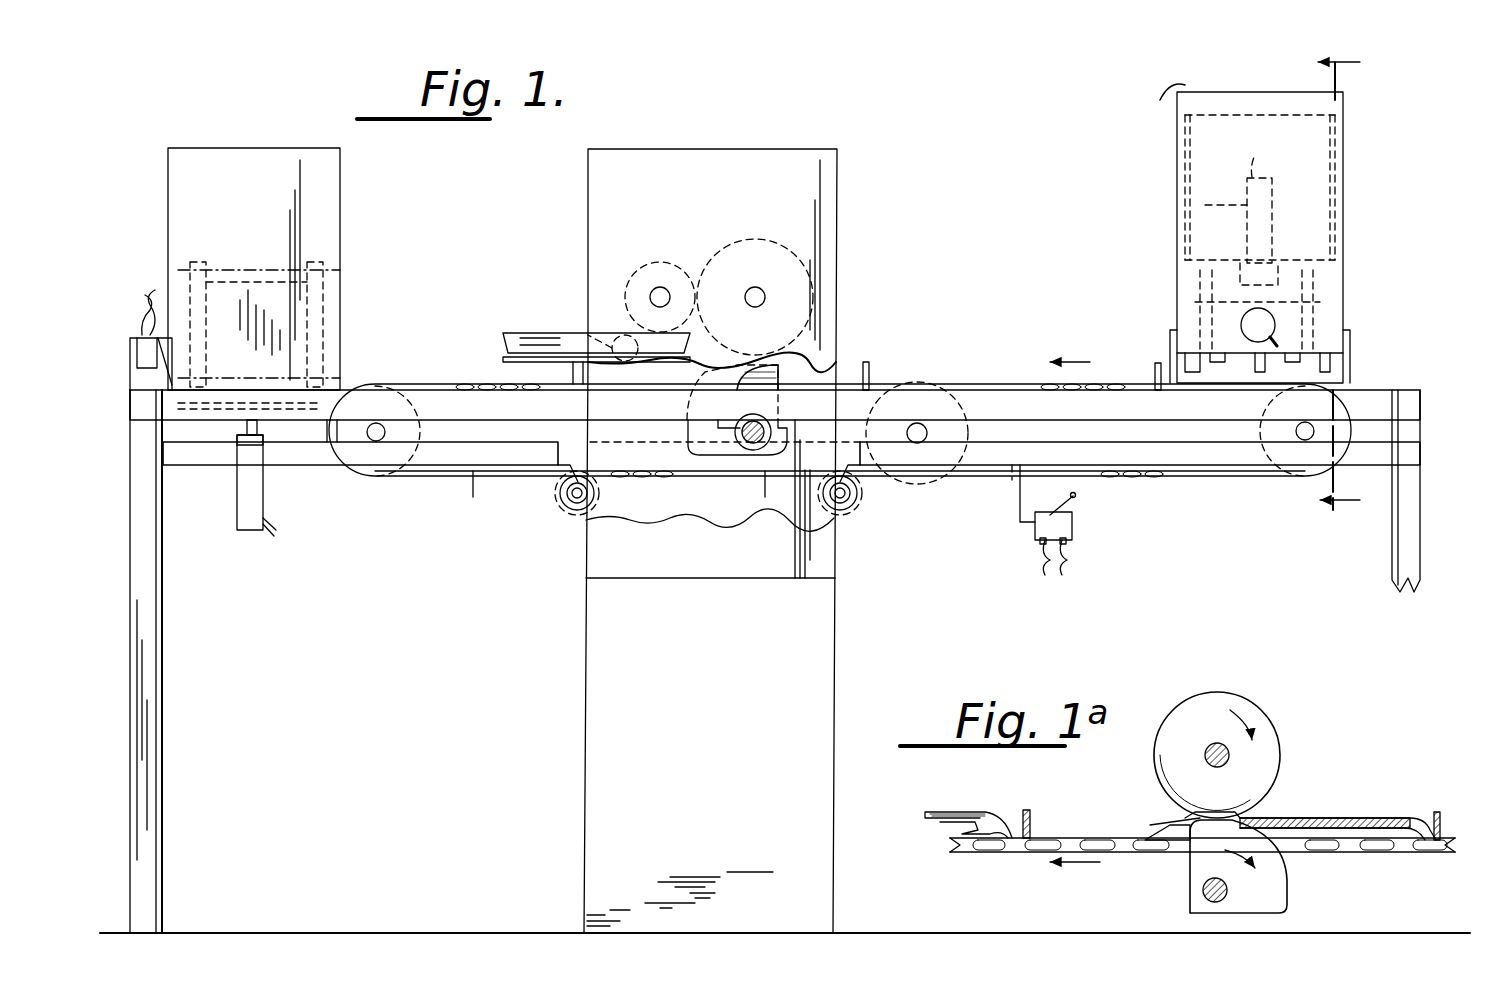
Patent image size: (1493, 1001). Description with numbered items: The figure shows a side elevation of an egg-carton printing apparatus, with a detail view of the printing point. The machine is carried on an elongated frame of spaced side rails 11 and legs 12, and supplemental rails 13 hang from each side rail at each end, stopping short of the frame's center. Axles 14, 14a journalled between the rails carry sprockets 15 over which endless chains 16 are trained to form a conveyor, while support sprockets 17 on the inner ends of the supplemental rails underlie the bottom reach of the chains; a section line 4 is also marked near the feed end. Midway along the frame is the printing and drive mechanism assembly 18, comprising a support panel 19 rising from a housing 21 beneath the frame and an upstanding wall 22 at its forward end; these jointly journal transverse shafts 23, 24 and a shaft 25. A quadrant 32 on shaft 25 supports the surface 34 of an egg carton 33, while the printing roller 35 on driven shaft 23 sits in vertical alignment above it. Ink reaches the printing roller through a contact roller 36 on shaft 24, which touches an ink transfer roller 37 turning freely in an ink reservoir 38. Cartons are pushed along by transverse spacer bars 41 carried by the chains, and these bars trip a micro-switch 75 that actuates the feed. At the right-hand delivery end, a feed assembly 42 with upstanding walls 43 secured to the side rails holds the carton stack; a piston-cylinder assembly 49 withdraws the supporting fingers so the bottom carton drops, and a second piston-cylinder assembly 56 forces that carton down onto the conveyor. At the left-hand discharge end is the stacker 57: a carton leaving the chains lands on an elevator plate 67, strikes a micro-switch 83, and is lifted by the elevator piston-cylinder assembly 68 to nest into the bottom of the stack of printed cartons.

In FIG. 1, the section line 4- 4 is at (1339, 288).
In FIG. 1, the side rails 11 is at (1008, 395).
In FIG. 1, the legs 12 is at (150, 745).
In FIG. 1, the supplemental rails 13 is at (300, 462).
In FIG. 1, the axle 14 is at (376, 442).
In FIG. 1, the axle 14a is at (1300, 442).
In FIG. 1, the sprockets 15 is at (400, 410).
In FIG. 1, the endless chains 16 is at (432, 478).
In FIG. 1a, the endless chains 16 is at (1010, 852).
In FIG. 1, the support sprockets 17 is at (562, 497).
In FIG. 1, the printing and drive mechanism assembly 18 is at (852, 278).
In FIG. 1a, the printing and drive mechanism assembly 18 is at (1303, 762).
In FIG. 1, the support panel 19 is at (625, 497).
In FIG. 1, the housing 21 is at (595, 758).
In FIG. 1, the upstanding wall 22 is at (600, 205).
In FIG. 1, the shaft 23 is at (755, 297).
In FIG. 1, the shaft 24 is at (662, 294).
In FIG. 1, the shaft 25 is at (750, 445).
In FIG. 1a, the shaft 25 is at (1202, 890).
In FIG. 1, the quadrant 32 is at (688, 437).
In FIG. 1a, the quadrant 32 is at (1290, 897).
In FIG. 1a, the egg carton 33 is at (1398, 810).
In FIG. 1a, the surface 34 is at (1318, 818).
In FIG. 1, the printing roller 35 is at (800, 255).
In FIG. 1a, the printing roller 35 is at (1236, 718).
In FIG. 1, the contact roller 36 is at (651, 279).
In FIG. 1, the ink transfer roller 37 is at (612, 335).
In FIG. 1, the ink reservoir 38 is at (510, 333).
In FIG. 1, the spacer bar 41 is at (872, 365).
In FIG. 1a, the spacer bar 41 is at (1026, 812).
In FIG. 1, the feed assembly 42 is at (1350, 232).
In FIG. 1, the upstanding walls 43 is at (1147, 105).
In FIG. 1, the piston-cylinder assembly 49 is at (1248, 326).
In FIG. 1, the piston-cylinder assembly 56 is at (1175, 207).
In FIG. 1, the stacker 57 is at (350, 228).
In FIG. 1, the elevator plate 67 is at (185, 406).
In FIG. 1, the elevator piston-cylinder assembly 68 is at (240, 520).
In FIG. 1, the micro-switch 75 is at (1075, 527).
In FIG. 1, the micro-switch 83 is at (135, 345).